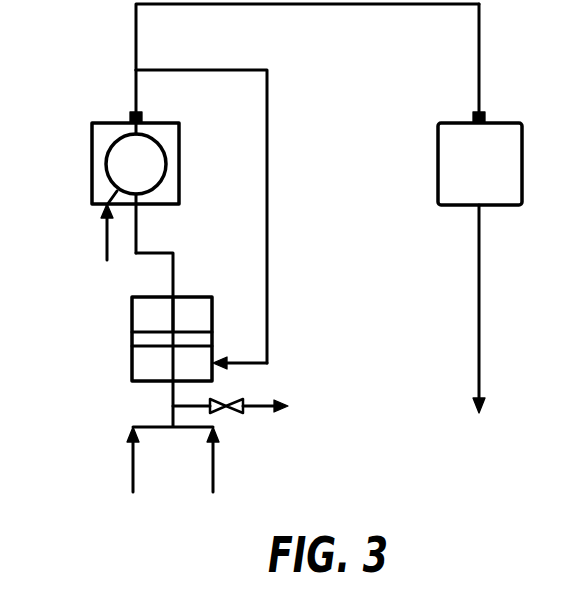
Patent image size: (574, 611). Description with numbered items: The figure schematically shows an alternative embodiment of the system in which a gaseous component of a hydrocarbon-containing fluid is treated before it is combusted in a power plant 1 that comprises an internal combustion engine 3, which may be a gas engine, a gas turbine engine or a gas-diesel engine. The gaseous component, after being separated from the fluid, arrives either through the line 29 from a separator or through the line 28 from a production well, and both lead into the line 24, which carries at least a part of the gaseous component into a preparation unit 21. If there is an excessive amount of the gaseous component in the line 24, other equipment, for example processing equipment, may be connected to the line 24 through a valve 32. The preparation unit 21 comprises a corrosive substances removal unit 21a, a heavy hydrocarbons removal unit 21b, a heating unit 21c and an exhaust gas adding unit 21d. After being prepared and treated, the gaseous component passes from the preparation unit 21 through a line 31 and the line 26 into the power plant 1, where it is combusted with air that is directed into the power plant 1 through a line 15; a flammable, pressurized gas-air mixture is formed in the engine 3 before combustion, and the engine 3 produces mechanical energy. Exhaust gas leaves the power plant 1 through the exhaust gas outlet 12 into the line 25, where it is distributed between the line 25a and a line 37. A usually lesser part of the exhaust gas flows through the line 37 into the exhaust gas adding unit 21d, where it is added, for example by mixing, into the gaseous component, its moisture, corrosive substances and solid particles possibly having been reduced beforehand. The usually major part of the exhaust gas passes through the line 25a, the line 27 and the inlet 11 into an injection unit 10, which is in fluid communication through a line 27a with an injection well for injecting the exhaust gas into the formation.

The power plant 1 is at (102, 133).
The internal combustion engine 3 is at (123, 158).
The injection unit 10 is at (443, 168).
The inlet 11 is at (485, 112).
The exhaust gas outlet 12 is at (141, 116).
The line 15 is at (107, 233).
The preparation unit 21 is at (202, 342).
The corrosive substances removal unit 21a is at (142, 363).
The heavy hydrocarbons removal unit 21b is at (142, 312).
The heating unit 21c is at (192, 307).
The exhaust gas adding unit 21d is at (205, 372).
The line 24 is at (170, 392).
The line 25 is at (135, 90).
The line 25a is at (137, 47).
The line 26 is at (138, 235).
The line 27 is at (478, 62).
The line 27a is at (479, 357).
The line 28 is at (217, 467).
The line 29 is at (128, 468).
The line 31 is at (170, 270).
The valve 32 is at (218, 413).
The control line 37 is at (267, 178).